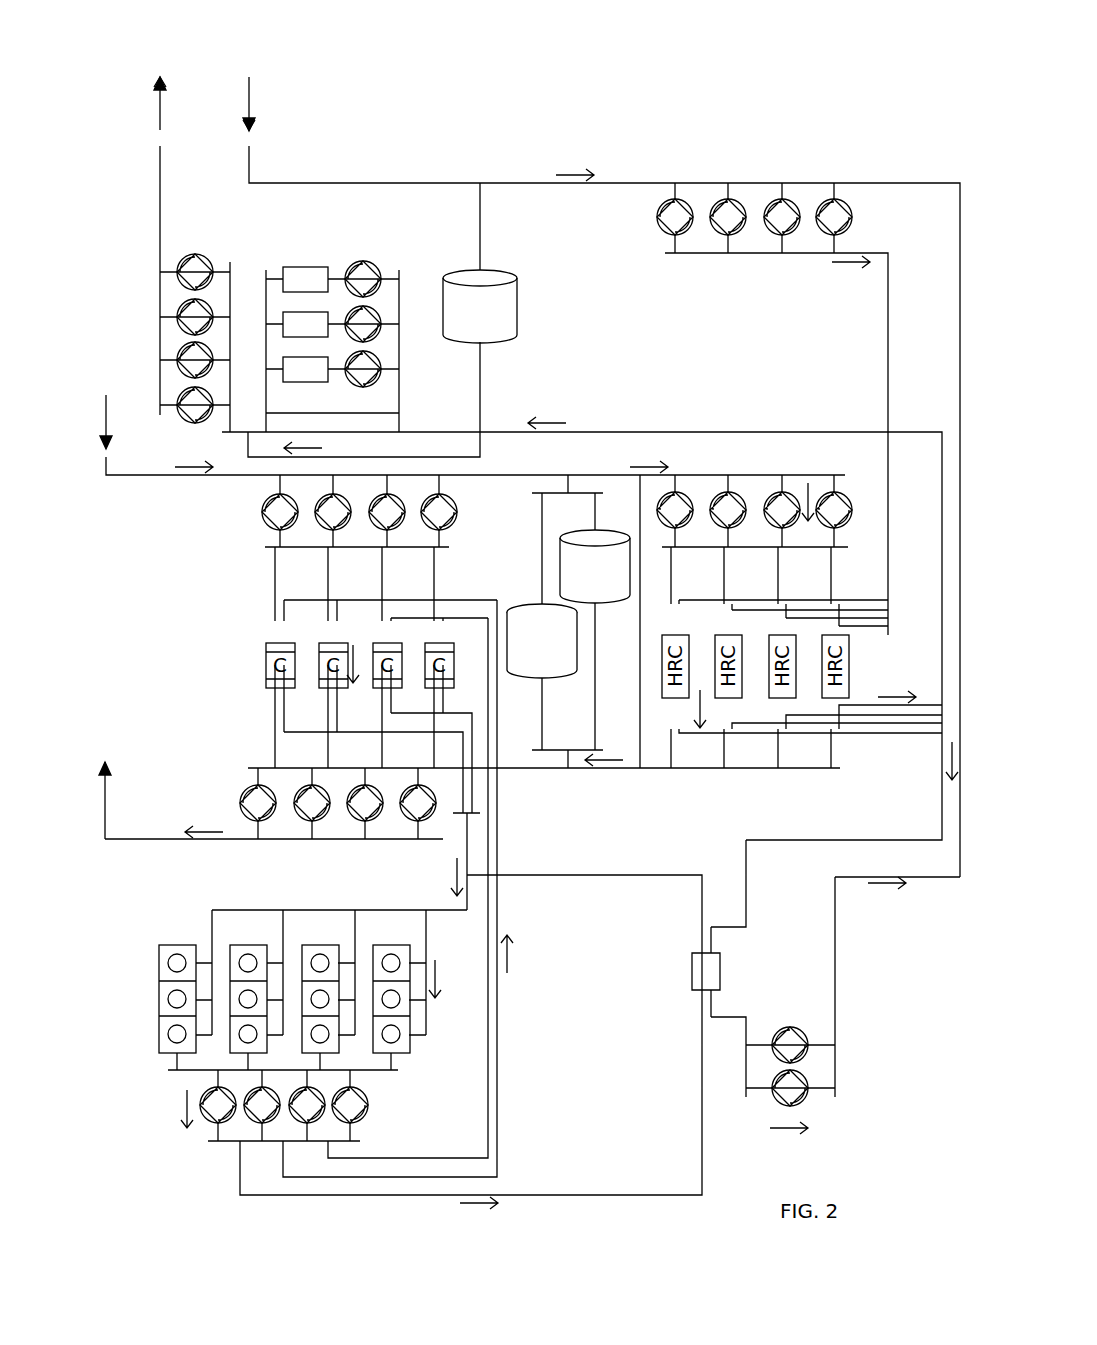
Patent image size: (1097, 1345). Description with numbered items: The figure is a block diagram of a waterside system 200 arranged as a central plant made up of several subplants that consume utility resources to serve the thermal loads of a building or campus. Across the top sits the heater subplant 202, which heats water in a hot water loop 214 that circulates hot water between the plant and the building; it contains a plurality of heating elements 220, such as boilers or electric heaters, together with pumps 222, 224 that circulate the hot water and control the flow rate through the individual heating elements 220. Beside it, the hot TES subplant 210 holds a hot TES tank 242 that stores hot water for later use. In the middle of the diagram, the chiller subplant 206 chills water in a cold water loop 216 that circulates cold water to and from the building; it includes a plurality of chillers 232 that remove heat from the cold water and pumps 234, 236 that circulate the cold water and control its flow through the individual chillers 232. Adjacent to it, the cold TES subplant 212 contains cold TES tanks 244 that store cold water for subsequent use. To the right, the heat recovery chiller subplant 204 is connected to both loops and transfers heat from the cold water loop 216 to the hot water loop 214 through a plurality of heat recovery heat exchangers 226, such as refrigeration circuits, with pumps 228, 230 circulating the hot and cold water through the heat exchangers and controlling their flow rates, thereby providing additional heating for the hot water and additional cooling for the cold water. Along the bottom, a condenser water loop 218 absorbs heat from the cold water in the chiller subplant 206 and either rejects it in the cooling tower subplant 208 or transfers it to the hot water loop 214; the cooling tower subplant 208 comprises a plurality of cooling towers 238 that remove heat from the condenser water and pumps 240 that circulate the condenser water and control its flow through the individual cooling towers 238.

The waterside system 200 is at (806, 57).
The heater subplant 202 is at (423, 175).
The heat recovery chiller subplant 204 is at (871, 750).
The chiller subplant 206 is at (222, 590).
The cooling tower subplant 208 is at (138, 990).
The hot thermal energy storage subplant 210 is at (531, 329).
The cold thermal energy storage subplant 212 is at (520, 556).
The hot water loop 214 is at (158, 192).
The cold water loop 216 is at (162, 478).
The condenser water loop 218 is at (696, 1198).
The heating elements 220 is at (282, 266).
The pumps 222 is at (198, 258).
The pumps 224 is at (378, 266).
The heat recovery heat exchangers 226 is at (851, 663).
The pumps 228 is at (840, 496).
The pumps 230 is at (852, 212).
The chillers 232 is at (266, 658).
The pumps 234 is at (242, 795).
The pumps 236 is at (259, 505).
The cooling towers 238 is at (410, 1042).
The pumps 240 is at (369, 1112).
The hot TES tank 242 is at (504, 288).
The cold TES tanks 244 is at (574, 534).